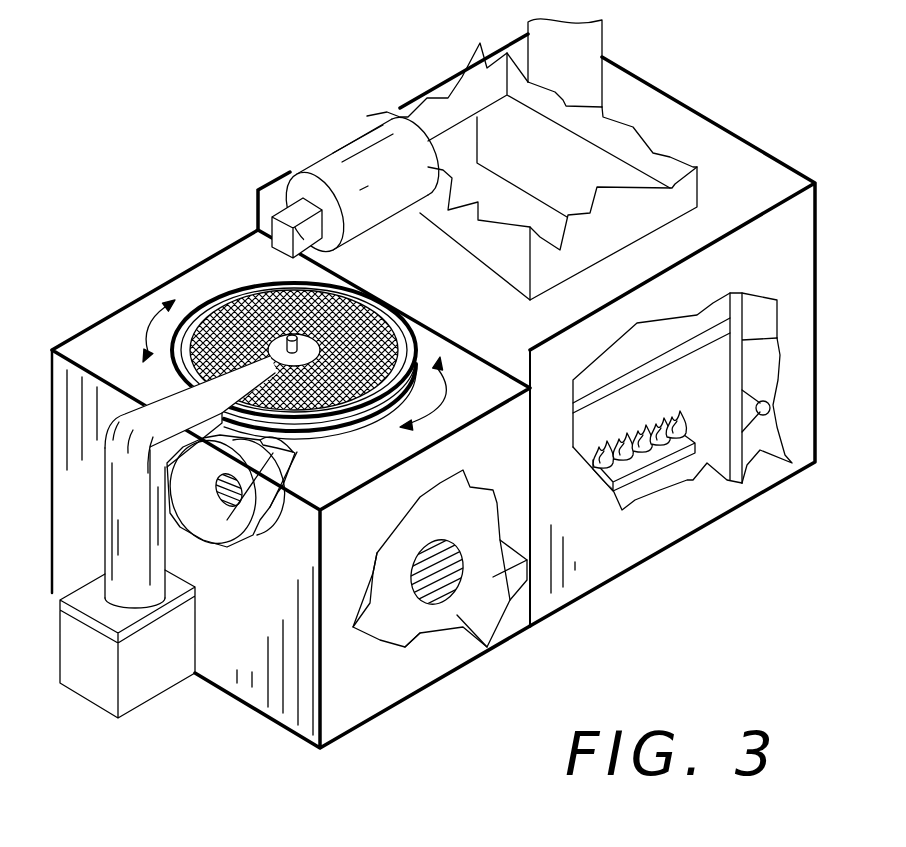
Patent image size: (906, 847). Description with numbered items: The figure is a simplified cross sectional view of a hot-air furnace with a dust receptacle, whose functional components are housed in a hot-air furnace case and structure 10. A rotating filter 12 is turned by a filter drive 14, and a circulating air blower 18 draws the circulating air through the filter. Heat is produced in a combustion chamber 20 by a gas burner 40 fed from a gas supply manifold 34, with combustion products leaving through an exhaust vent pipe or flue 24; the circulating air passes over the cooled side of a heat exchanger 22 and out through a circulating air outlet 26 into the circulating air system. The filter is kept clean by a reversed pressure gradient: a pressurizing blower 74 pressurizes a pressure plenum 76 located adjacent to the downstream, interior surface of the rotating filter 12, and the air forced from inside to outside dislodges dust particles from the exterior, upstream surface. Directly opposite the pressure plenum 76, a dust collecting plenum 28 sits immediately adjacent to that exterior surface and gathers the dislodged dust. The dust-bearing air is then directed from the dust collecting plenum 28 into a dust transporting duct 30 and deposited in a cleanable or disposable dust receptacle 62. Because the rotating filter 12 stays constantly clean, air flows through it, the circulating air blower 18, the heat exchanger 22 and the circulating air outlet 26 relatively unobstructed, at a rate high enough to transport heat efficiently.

The hot-air furnace case and structure 10 is at (676, 135).
The rotating filter 12 is at (205, 300).
The filter drive 14 is at (330, 182).
The circulating air blower 18 is at (450, 626).
The combustion chamber 20 is at (650, 455).
The heat exchanger 22 is at (703, 350).
The exhaust vent pipe (flue) 24 is at (553, 47).
The circulating air outlet 26 is at (473, 80).
The dust collecting plenum 28 is at (168, 397).
The dust transporting duct 30 is at (122, 492).
The gas supply manifold 34 is at (768, 412).
The gas burner 40 is at (615, 485).
The dust receptacle 62 is at (160, 672).
The pressurizing blower 74 is at (283, 492).
The pressure plenum 76 is at (275, 453).